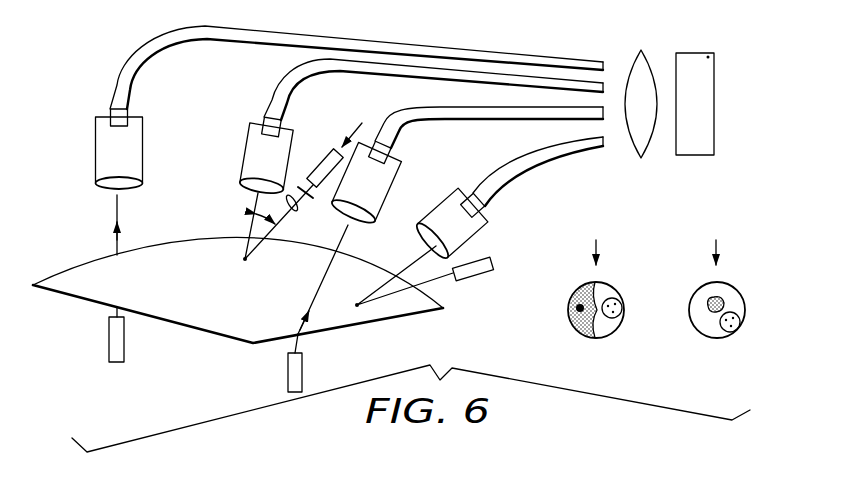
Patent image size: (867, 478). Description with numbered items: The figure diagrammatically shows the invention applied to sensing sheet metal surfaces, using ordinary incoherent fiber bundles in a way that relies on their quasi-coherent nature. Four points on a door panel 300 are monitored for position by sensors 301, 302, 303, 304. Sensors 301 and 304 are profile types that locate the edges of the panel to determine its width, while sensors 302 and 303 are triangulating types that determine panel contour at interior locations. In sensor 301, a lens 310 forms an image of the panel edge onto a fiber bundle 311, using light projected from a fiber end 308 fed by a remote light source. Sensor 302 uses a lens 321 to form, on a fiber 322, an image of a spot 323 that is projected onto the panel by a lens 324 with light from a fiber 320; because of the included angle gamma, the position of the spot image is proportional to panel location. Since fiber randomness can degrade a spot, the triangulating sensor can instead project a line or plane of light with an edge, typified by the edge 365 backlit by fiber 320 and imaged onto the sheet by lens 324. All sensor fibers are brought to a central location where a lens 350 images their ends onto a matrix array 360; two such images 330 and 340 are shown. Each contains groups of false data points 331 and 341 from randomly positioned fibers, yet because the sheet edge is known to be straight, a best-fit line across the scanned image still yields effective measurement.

The door panel 300 is at (192, 322).
The profile sensor 301 is at (95, 152).
The triangulating sensor 302 is at (248, 147).
The triangulating sensor 303 is at (487, 226).
The profile sensor 304 is at (390, 195).
The fiber end 308 is at (108, 333).
The lens 310 is at (135, 177).
The fiber bundle 311 is at (118, 93).
The fiber 320 is at (334, 147).
The lens 321 is at (247, 193).
The fiber 322 is at (282, 93).
The spot 323 is at (243, 259).
The lens 324 is at (297, 201).
The image 330 is at (614, 351).
The group of false data points 331 is at (612, 300).
The image 340 is at (744, 286).
The group of false data points 341 is at (737, 333).
The lens 350 is at (643, 53).
The matrix array 360 is at (708, 55).
The edge 365 is at (303, 189).